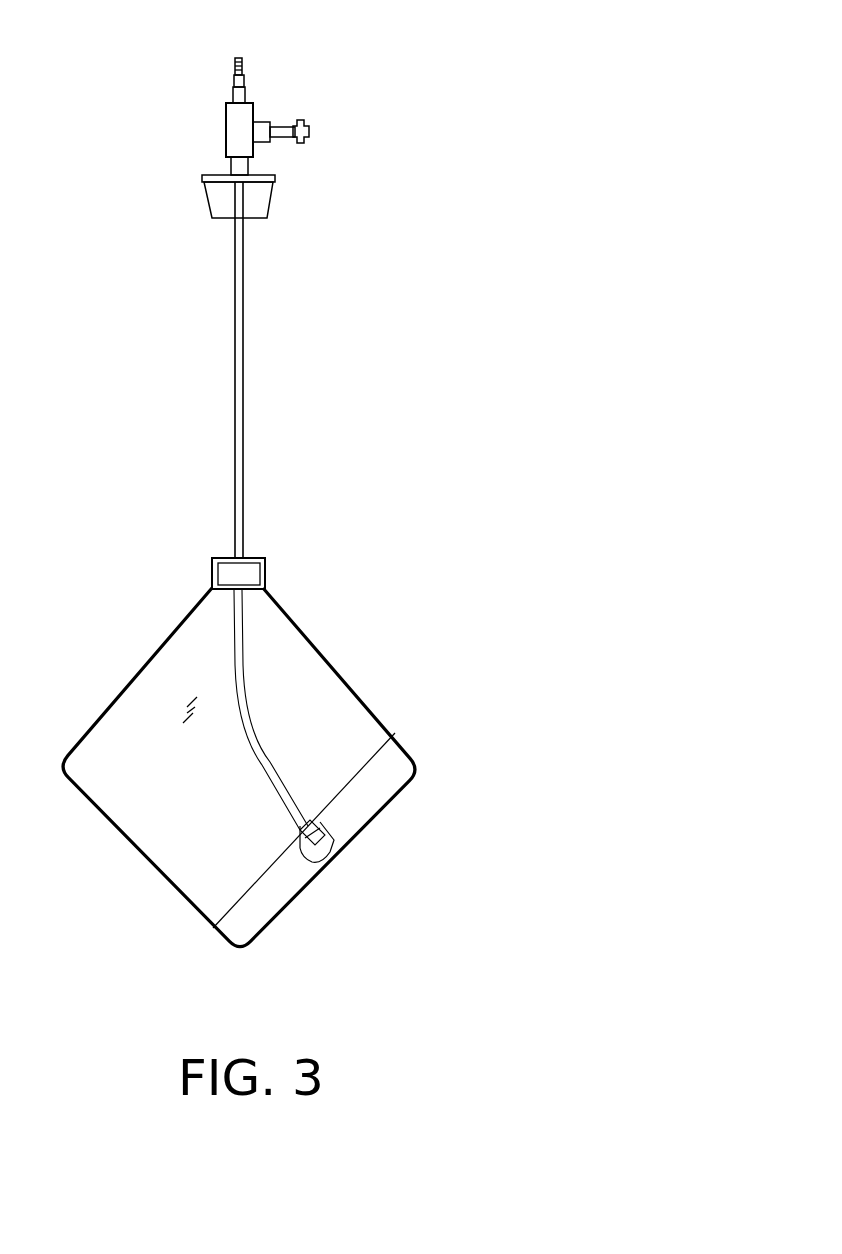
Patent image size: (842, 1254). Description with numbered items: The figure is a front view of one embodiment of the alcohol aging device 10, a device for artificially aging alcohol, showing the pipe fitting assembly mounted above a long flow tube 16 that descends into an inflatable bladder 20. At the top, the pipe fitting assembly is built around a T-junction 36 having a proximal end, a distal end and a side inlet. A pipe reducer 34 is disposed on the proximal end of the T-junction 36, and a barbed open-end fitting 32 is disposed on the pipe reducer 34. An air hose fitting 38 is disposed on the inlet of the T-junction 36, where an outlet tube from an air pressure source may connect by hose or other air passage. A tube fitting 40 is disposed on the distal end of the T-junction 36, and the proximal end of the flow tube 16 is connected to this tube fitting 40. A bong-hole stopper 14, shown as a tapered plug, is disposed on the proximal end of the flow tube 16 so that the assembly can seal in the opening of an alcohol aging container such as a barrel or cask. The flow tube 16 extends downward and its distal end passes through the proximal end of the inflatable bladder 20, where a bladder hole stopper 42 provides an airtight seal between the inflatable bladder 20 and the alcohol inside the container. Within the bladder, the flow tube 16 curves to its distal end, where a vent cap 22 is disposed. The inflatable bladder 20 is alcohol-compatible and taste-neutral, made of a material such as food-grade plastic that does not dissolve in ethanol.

The alcohol aging device 10 is at (490, 180).
The bong-hole stopper 14 is at (233, 195).
The flow tube 16 is at (237, 397).
The inflatable bladder 20 is at (330, 655).
The vent cap 22 is at (333, 843).
The barbed open-end fitting 32 is at (245, 62).
The pipe reducer 34 is at (245, 95).
The T-junction 36 is at (233, 130).
The air hose fitting 38 is at (310, 135).
The tube fitting 40 is at (232, 162).
The bladder hole stopper 42 is at (235, 573).